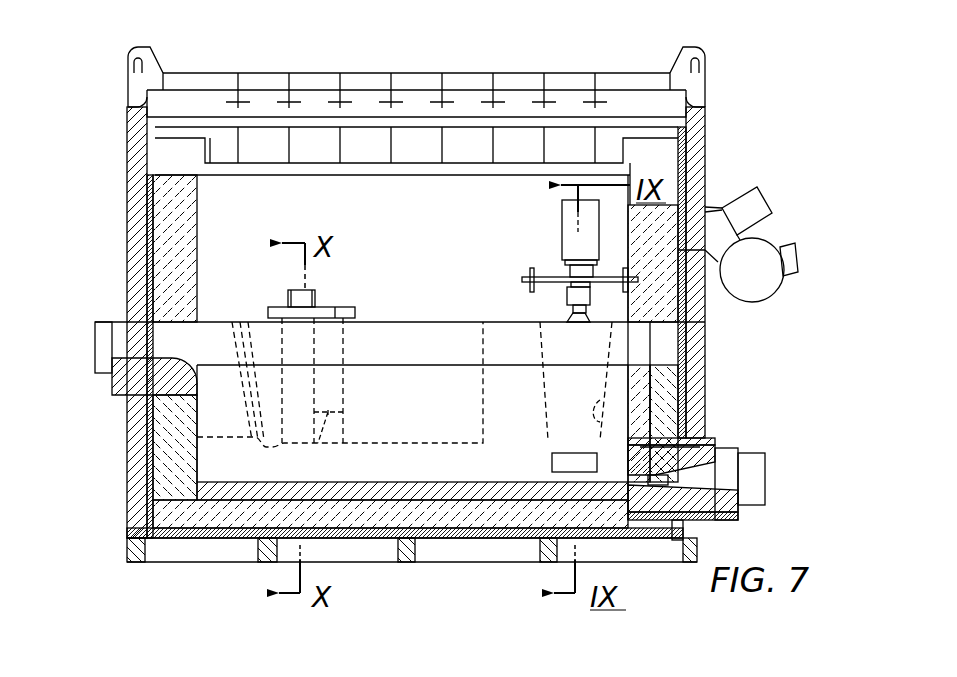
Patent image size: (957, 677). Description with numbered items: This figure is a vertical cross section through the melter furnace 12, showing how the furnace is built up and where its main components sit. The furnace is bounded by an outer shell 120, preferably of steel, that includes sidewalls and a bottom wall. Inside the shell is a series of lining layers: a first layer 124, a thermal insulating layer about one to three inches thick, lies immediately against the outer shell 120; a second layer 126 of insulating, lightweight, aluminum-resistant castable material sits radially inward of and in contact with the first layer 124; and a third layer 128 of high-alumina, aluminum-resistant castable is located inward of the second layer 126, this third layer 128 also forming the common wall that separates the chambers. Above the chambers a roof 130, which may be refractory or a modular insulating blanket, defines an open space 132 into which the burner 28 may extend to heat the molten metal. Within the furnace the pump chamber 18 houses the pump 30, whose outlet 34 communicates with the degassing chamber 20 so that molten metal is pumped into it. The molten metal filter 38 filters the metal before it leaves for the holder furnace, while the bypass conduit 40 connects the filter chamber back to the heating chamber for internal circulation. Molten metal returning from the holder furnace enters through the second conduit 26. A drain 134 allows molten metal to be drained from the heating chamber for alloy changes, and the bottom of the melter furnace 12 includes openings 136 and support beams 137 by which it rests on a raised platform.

The melter furnace 12 is at (110, 90).
The pump chamber 18 is at (603, 398).
The molten metal degassing chamber 20 is at (483, 340).
The second conduit 26 is at (95, 343).
The burner 28 is at (767, 190).
The pump 30 is at (562, 218).
The pump outlet 34 is at (552, 462).
The molten metal filter 38 is at (282, 340).
The bypass conduit 40 is at (318, 443).
The outer shell 120 is at (698, 378).
The first layer 124 is at (145, 425).
The second layer 126 is at (153, 482).
The third layer 128 is at (192, 494).
The roof 130 is at (362, 148).
The open space 132 is at (445, 205).
The drain 134 is at (738, 497).
The openings 136 is at (235, 550).
The support beams 137 is at (410, 562).